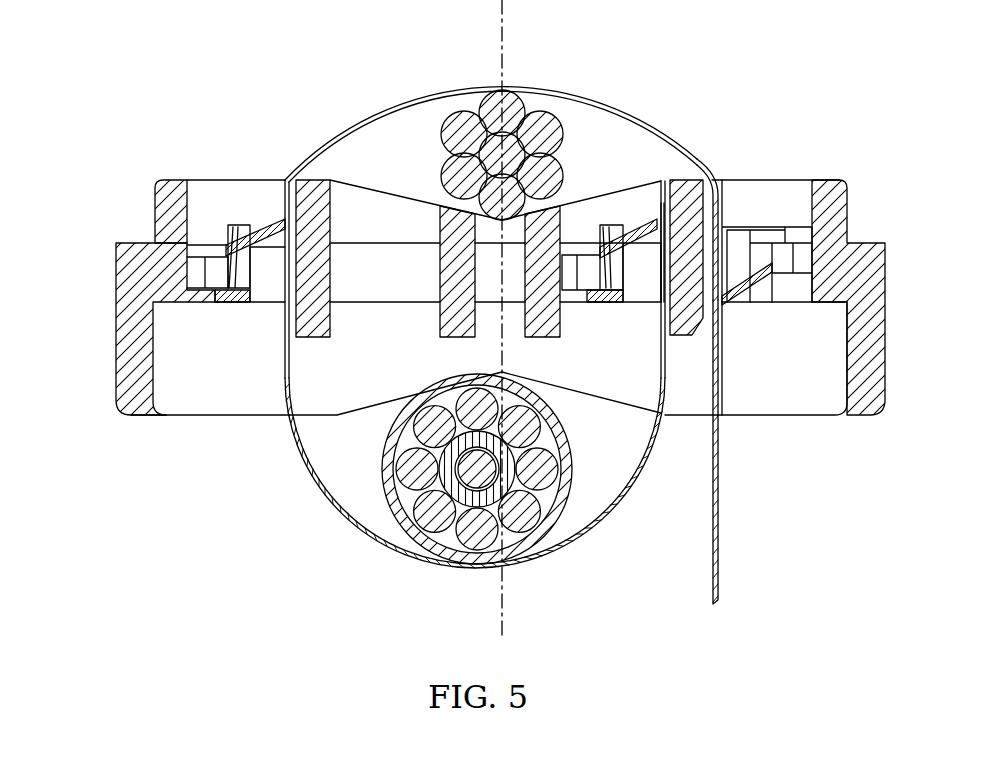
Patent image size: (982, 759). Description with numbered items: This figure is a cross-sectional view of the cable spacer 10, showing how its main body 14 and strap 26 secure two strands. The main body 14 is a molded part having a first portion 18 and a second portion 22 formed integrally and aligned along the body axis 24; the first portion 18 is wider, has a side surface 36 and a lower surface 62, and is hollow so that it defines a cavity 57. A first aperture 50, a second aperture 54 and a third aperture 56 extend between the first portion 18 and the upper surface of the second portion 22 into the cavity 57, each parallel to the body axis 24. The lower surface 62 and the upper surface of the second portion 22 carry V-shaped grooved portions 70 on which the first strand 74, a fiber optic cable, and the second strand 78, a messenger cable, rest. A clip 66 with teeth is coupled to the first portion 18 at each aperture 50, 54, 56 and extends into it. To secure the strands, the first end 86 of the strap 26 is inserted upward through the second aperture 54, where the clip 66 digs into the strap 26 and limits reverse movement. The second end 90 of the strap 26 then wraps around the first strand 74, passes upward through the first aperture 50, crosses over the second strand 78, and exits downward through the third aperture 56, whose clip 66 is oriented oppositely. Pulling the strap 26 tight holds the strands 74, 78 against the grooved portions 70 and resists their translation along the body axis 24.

The cable spacer 10 is at (755, 110).
The main body 14 is at (100, 166).
The first portion 18 is at (112, 338).
The second portion 22 is at (150, 213).
The body axis 24 is at (502, 57).
The strap 26 is at (362, 103).
The side surface 36 is at (884, 320).
The first aperture 50 is at (290, 180).
The second aperture 54 is at (665, 180).
The third aperture 56 is at (718, 180).
The cavity 57 is at (780, 398).
The lower surface 62 is at (147, 418).
The clip 66 is at (236, 242).
The first interior grooved portion 70 is at (405, 173).
The first strand 74 is at (570, 447).
The second strand 78 is at (562, 122).
The first end of the strap 86 is at (657, 216).
The second end of the strap 90 is at (718, 549).